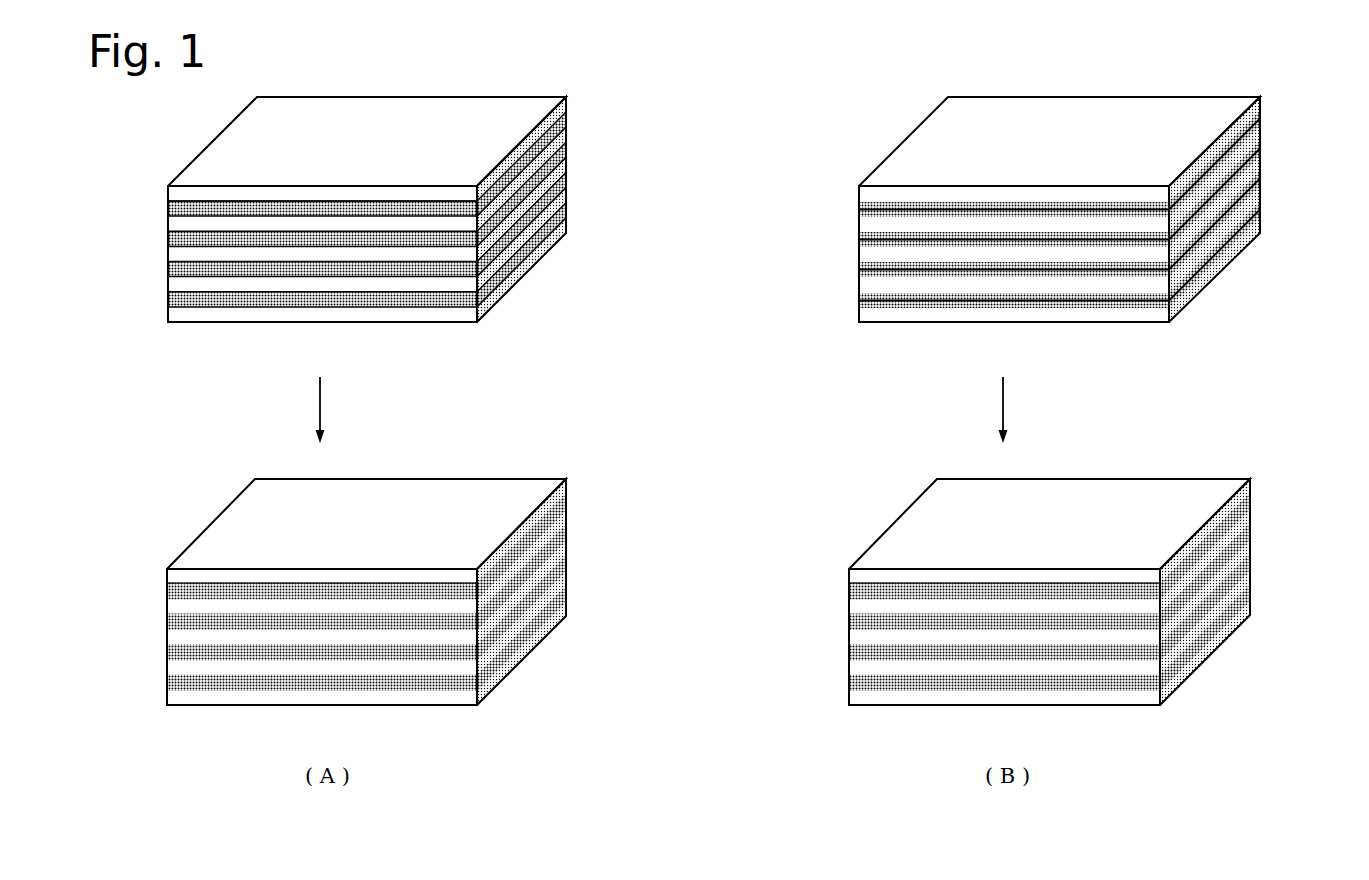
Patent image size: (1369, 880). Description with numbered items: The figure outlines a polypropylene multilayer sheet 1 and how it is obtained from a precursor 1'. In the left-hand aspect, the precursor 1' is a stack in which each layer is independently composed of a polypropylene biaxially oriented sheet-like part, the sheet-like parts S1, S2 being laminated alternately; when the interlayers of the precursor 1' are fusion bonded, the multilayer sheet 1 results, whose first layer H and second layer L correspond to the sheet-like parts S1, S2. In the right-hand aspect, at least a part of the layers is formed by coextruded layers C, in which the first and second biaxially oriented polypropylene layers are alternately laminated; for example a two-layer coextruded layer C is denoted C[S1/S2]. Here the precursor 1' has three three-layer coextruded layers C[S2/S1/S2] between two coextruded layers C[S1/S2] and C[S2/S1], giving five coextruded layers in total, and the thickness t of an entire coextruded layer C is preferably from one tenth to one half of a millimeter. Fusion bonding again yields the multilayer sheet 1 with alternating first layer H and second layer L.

The precursor 1' is at (709, 232).
The multilayer sheet 1 is at (686, 592).
The polypropylene biaxially oriented sheet-like part S1 is at (180, 190).
The polypropylene biaxially oriented sheet-like part S2 is at (180, 209).
The coextruded layer C is at (848, 190).
The thickness of the coextruded layer t is at (1169, 187).
The first layer H is at (178, 574).
The second layer L is at (172, 593).